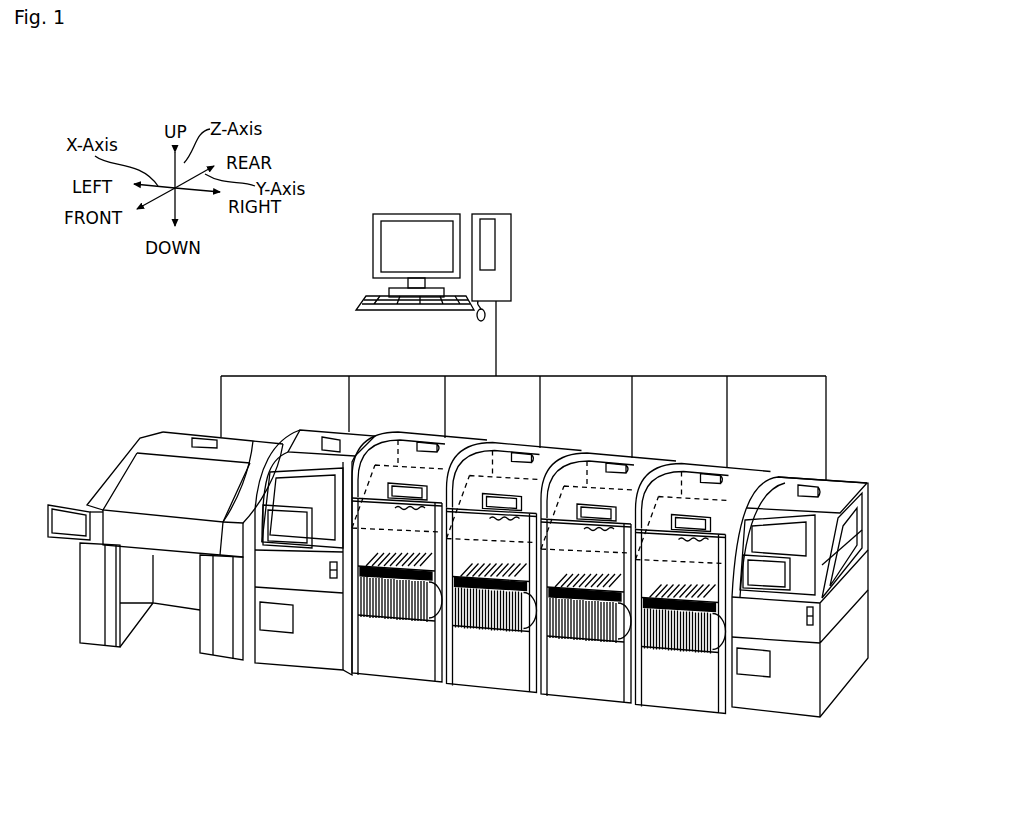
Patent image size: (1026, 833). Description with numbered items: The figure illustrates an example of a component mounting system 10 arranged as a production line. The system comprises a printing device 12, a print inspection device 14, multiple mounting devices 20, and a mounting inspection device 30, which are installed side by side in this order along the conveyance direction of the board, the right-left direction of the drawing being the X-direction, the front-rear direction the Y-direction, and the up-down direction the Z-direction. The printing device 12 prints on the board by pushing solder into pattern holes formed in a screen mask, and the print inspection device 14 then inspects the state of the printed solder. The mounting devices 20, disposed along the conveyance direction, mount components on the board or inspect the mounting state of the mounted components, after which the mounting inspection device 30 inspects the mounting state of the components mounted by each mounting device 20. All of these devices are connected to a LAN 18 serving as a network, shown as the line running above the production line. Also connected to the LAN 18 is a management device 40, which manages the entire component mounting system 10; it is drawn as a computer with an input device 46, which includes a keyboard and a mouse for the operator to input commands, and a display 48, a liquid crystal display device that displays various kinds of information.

The component mounting system 10 is at (726, 147).
The printing device 12 is at (166, 672).
The print inspection device 14 is at (287, 688).
The LAN 18 is at (672, 376).
The mounting device 20 is at (389, 701).
The mounting inspection device 30 is at (772, 738).
The management device 40 is at (508, 190).
The input device 46 is at (358, 300).
The display 48 is at (372, 254).